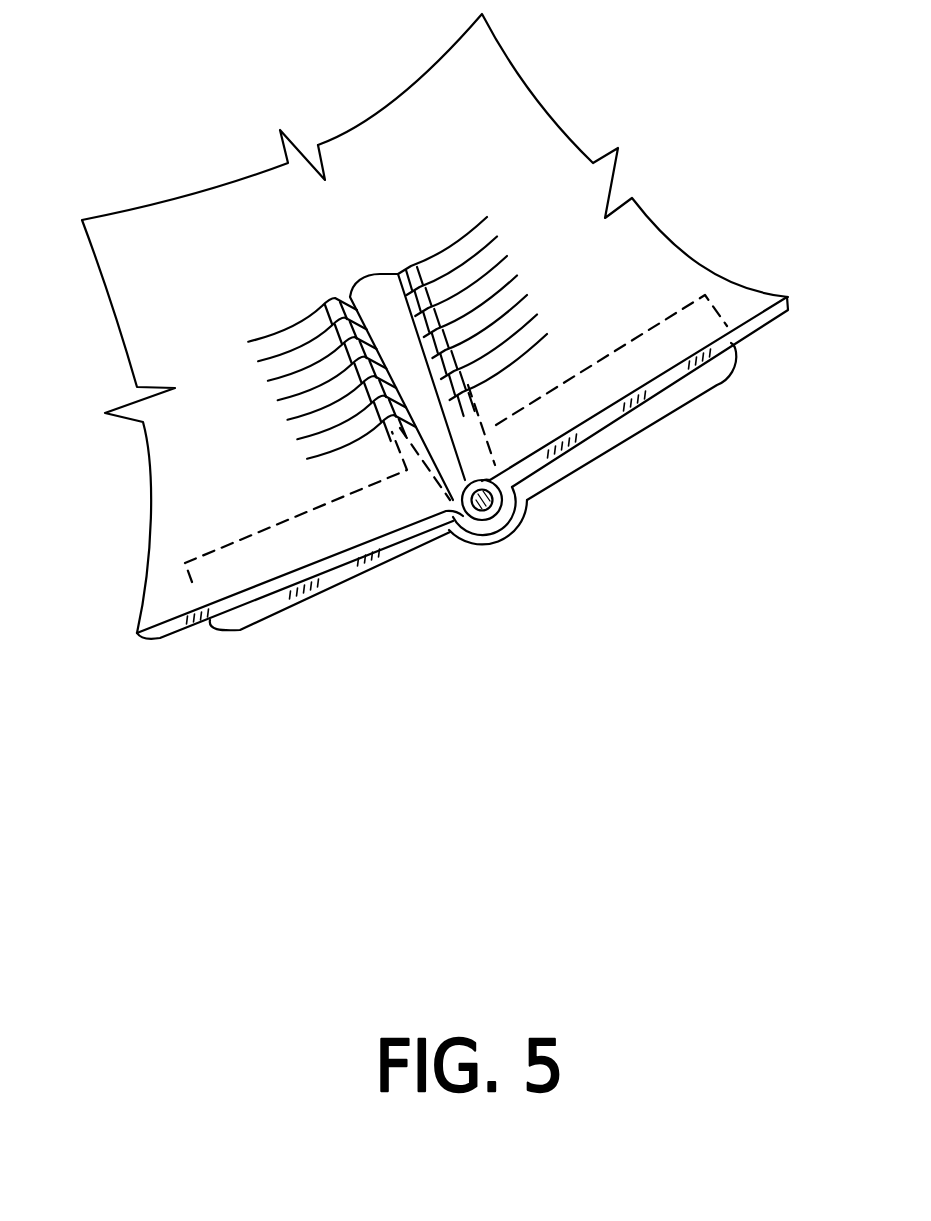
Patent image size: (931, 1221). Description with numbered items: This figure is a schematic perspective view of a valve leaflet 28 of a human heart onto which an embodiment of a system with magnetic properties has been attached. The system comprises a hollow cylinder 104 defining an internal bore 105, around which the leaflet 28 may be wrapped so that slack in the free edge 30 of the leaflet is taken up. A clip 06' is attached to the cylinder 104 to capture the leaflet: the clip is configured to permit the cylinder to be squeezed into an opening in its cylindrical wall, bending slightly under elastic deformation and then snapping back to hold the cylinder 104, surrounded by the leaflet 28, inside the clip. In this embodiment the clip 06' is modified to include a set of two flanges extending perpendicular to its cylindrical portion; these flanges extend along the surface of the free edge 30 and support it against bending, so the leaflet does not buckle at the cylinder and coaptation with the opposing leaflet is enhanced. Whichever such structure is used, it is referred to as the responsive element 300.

The leaflet 28 is at (529, 133).
The free edge 30 is at (162, 634).
The responsive element 300 is at (660, 424).
The hollow cylinder 104 is at (458, 433).
The internal bore 105 is at (481, 506).
The clip 06' is at (544, 542).